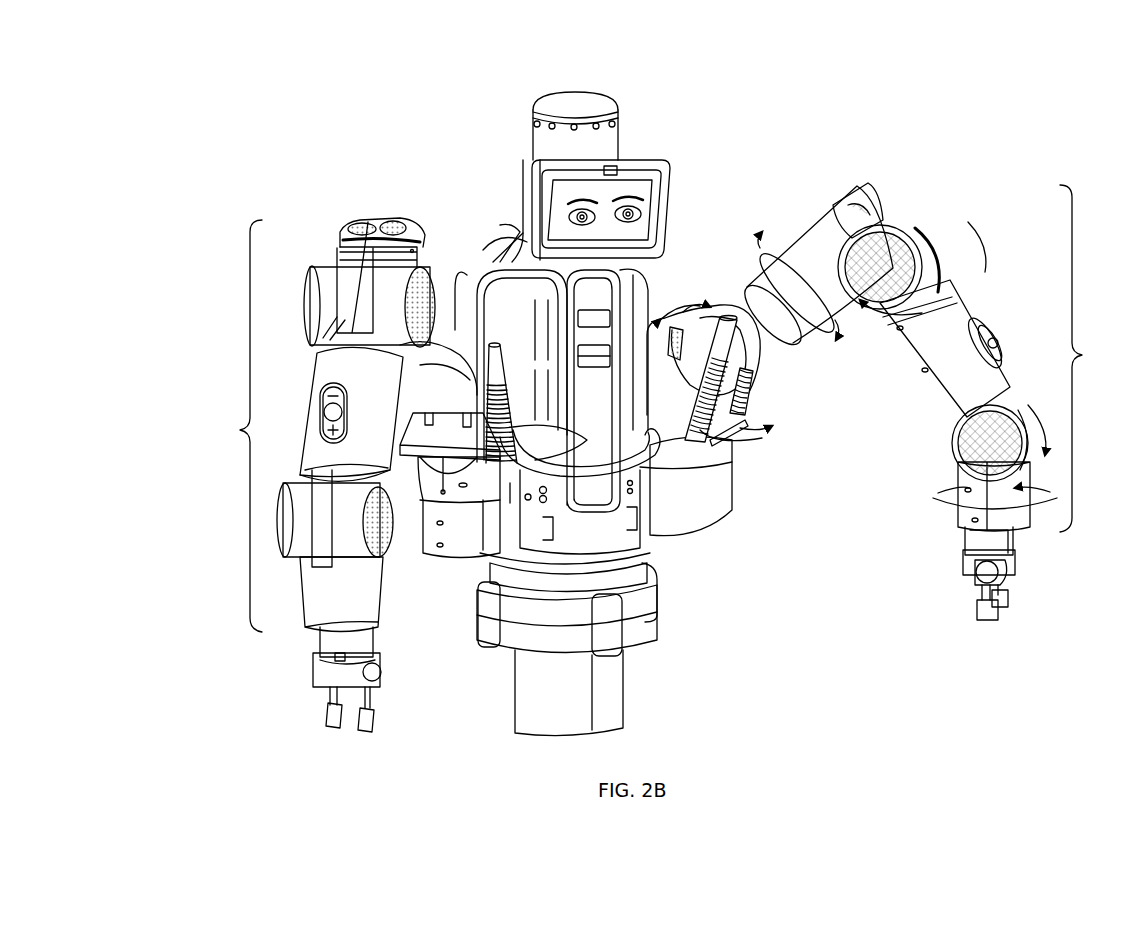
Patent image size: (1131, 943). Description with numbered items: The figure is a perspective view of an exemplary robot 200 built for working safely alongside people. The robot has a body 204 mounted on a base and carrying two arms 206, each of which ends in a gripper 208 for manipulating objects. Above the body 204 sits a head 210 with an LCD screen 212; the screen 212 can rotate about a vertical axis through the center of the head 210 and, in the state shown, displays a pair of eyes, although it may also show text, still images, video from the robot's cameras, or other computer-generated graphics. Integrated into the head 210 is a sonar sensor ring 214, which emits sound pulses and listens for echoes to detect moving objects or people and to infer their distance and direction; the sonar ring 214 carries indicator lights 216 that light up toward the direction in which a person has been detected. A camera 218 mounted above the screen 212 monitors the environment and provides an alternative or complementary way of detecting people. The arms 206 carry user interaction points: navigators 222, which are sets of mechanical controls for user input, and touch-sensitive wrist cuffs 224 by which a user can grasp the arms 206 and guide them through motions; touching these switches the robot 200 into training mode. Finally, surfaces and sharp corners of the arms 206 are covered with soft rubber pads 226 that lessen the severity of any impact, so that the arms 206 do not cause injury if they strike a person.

The robot 200 is at (322, 88).
The body 204 is at (648, 542).
The arms 206 is at (665, 408).
The grippers 208 is at (328, 696).
The head 210 is at (623, 700).
The LCD screen 212 is at (655, 205).
The sonar sensor ring 214 is at (533, 125).
The indicator lights 216 is at (598, 125).
The camera 218 is at (618, 170).
The navigators 222 is at (320, 398).
The wrist cuffs 224 is at (970, 540).
The soft rubber pads 226 is at (393, 222).